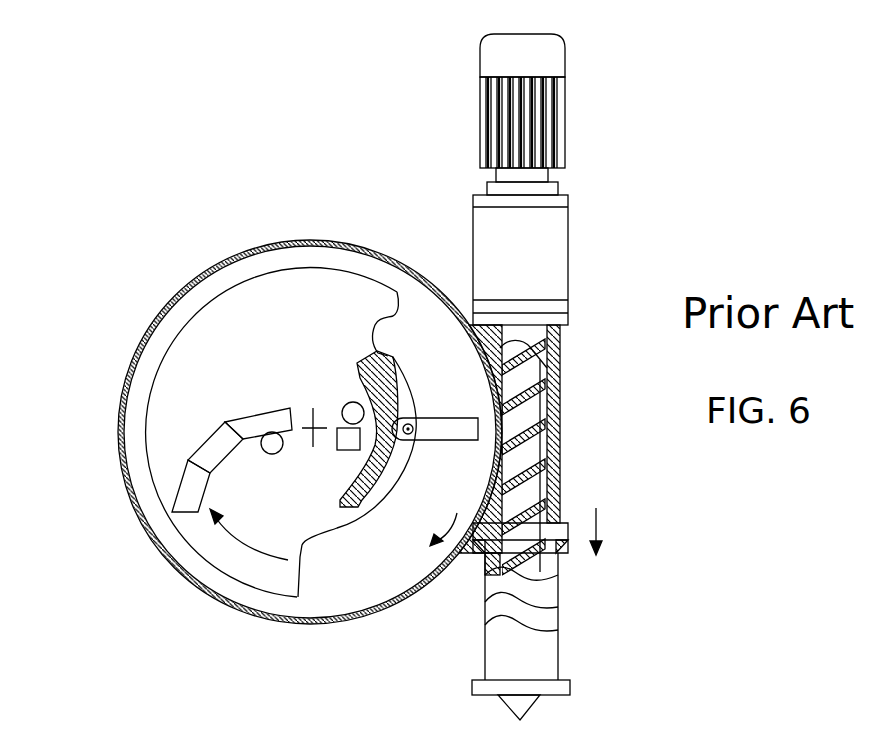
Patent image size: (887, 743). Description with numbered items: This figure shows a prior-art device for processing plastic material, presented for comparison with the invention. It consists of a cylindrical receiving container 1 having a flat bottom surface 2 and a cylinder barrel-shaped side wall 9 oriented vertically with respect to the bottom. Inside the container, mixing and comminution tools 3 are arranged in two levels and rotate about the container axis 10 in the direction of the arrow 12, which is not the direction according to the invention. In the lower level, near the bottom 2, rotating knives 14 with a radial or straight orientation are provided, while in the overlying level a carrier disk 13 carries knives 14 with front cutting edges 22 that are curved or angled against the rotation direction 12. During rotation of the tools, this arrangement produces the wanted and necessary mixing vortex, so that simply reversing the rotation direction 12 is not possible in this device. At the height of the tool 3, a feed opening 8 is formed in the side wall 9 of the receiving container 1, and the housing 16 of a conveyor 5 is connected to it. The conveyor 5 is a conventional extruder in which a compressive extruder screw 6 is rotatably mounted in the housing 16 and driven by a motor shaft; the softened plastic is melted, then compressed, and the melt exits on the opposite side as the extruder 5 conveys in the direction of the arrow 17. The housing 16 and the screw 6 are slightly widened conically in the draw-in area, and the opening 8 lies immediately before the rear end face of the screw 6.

The receiving container 1 is at (167, 293).
The bottom surface 2 is at (350, 568).
The mixing and comminution tools 3 is at (388, 368).
The conveyor 5 is at (547, 457).
The extruder screw 6 is at (527, 441).
The feed opening 8 is at (546, 480).
The side wall 9 is at (365, 250).
The rotor axis 10 is at (310, 423).
The rotation direction 12 is at (247, 543).
The carrier disk 13 is at (267, 308).
The knives 14 is at (202, 480).
The housing 16 is at (536, 402).
The conveying direction arrow 17 is at (615, 531).
The front cutting edges 22 is at (181, 482).